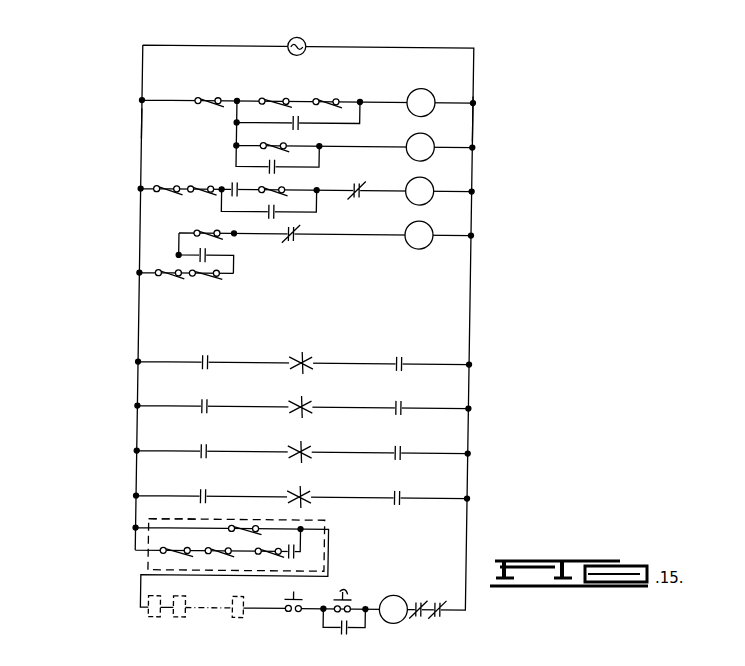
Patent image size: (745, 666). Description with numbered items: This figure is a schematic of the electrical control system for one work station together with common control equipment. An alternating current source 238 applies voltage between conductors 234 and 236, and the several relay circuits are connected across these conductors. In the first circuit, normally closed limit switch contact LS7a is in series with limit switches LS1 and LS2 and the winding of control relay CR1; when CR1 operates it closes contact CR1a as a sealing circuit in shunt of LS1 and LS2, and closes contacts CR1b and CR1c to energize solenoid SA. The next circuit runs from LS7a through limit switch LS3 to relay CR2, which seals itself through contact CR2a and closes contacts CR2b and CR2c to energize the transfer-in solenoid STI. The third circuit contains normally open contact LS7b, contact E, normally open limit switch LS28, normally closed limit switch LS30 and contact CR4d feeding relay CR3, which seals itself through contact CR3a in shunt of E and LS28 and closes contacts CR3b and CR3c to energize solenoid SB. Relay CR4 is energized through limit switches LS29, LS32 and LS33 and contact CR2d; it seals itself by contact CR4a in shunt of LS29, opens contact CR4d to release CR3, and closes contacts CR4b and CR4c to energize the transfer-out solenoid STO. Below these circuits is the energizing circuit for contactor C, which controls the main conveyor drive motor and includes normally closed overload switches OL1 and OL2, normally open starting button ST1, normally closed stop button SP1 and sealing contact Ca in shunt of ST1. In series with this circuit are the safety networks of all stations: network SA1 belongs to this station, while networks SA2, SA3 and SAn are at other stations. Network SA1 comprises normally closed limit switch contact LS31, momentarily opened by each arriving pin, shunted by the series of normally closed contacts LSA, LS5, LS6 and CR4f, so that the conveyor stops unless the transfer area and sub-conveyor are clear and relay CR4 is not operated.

The alternating current source 238 is at (298, 38).
The conductor 234 is at (139, 125).
The conductor 236 is at (472, 118).
The limit switch contact LS7a is at (208, 78).
The limit switch LS1 is at (266, 99).
The limit switch LS2 is at (324, 99).
The control relay CR1 is at (428, 78).
The contact CR1a is at (300, 128).
The limit switch LS3 is at (268, 148).
The relay CR2 is at (437, 132).
The contact CR2a is at (274, 168).
The limit switch contact LS7b is at (150, 198).
The limit switch LS30 is at (198, 186).
The contact E is at (236, 185).
The limit switch LS28 is at (274, 189).
The contact CR4d is at (358, 186).
The relay CR3 is at (430, 186).
The contact CR3a is at (280, 214).
The limit switch LS29 is at (233, 216).
The contact CR2d is at (298, 232).
The relay CR4 is at (430, 232).
The contact CR4a is at (178, 246).
The limit switch LS33 is at (158, 272).
The limit switch LS32 is at (214, 278).
The contact CR1b is at (208, 352).
The solenoid SA is at (320, 342).
The contact CR1c is at (410, 342).
The contact CR2b is at (204, 396).
The transfer-in solenoid STI is at (306, 400).
The contact CR2c is at (408, 388).
The contact CR3b is at (204, 442).
The solenoid SB is at (306, 445).
The contact CR3c is at (402, 446).
The contact CR4b is at (204, 486).
The transfer out solenoid STO is at (306, 490).
The contact CR4c is at (405, 478).
The limit switch contact LS31 is at (240, 524).
The safety network SA1 is at (150, 563).
The limit switch LSA is at (170, 557).
The limit switch LS5 is at (222, 556).
The limit switch LS6 is at (272, 556).
The contact CR4f is at (296, 560).
The safety network SA2 is at (150, 622).
The safety network SA3 is at (180, 622).
The safety network SAn is at (244, 622).
The stop button SP1 is at (303, 589).
The starting button ST1 is at (350, 600).
The contactor C is at (410, 588).
The contact Ca is at (346, 634).
The overload switch OL1 is at (426, 622).
The overload switch OL2 is at (444, 622).